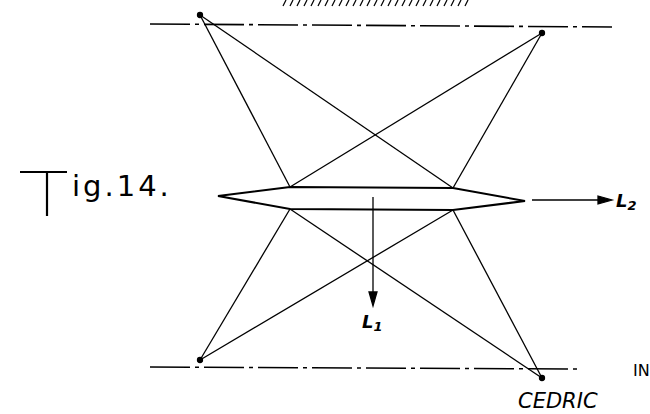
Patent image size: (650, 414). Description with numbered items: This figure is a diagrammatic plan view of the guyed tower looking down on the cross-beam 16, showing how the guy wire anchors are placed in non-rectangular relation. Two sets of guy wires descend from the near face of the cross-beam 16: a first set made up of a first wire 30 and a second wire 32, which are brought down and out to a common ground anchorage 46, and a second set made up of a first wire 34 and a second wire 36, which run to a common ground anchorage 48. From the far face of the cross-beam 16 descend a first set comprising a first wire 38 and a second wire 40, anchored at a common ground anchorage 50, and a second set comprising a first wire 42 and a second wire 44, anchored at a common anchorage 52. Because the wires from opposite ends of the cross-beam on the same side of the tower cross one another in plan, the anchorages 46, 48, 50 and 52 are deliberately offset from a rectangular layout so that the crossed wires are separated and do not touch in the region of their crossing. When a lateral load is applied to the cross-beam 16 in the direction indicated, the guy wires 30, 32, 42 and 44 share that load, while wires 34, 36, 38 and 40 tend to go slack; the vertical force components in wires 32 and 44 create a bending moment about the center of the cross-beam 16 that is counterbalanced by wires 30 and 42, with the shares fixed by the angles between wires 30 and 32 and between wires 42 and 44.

The cross-beam 16 is at (483, 194).
The first wire 30 is at (300, 302).
The second wire 32 is at (251, 272).
The first wire 34 is at (418, 296).
The second wire 36 is at (492, 284).
The first wire 38 is at (462, 82).
The second wire 40 is at (497, 115).
The first wire 42 is at (288, 77).
The second wire 44 is at (258, 130).
The ground anchorage 46 is at (200, 360).
The ground anchorage 48 is at (542, 378).
The ground anchorage 50 is at (542, 34).
The anchorage 52 is at (200, 16).